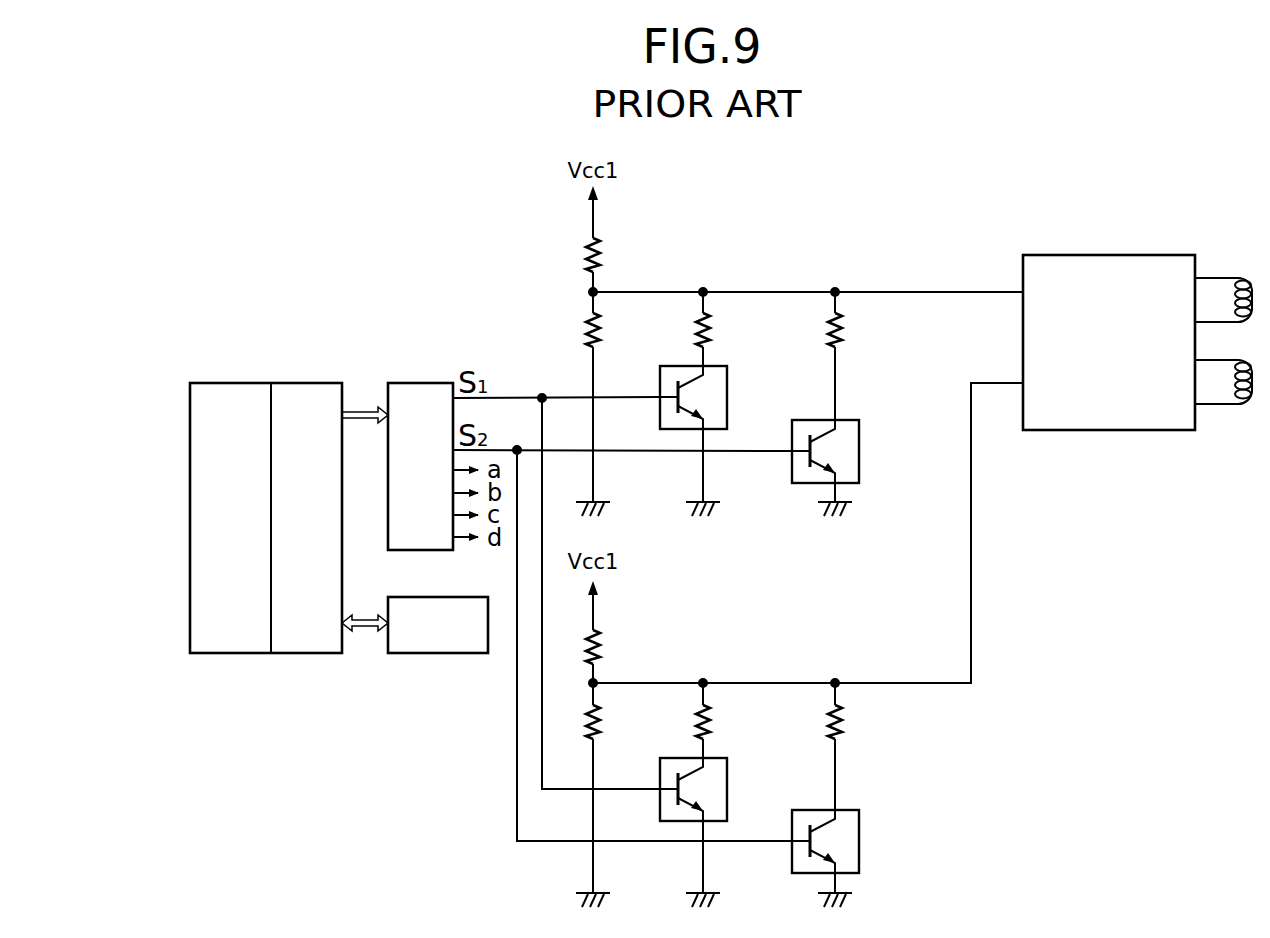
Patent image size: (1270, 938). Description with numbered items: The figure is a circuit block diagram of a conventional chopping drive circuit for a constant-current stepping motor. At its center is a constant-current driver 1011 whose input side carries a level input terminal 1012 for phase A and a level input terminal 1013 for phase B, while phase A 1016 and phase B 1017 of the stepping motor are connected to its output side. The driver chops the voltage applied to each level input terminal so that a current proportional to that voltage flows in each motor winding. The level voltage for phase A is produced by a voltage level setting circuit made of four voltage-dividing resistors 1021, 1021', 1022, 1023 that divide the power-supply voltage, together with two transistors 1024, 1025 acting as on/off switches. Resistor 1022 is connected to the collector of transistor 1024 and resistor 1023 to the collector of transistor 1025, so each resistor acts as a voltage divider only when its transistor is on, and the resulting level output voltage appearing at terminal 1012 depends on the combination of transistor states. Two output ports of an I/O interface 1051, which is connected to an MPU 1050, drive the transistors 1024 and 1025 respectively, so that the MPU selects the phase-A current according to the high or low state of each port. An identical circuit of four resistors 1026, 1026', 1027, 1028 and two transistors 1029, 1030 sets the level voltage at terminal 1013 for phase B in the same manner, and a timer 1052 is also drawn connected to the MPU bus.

The constant-current driver 1011 is at (1122, 255).
The level input terminal for phase A 1012 is at (920, 291).
The level input terminal for phase B 1013 is at (972, 550).
The phase A 1016 is at (1219, 278).
The phase B 1017 is at (1219, 405).
The voltage-dividing resistor 1021 is at (642, 251).
The voltage-dividing resistor 1021' is at (640, 325).
The voltage-dividing resistor 1022 is at (710, 322).
The voltage-dividing resistor 1023 is at (842, 322).
The transistor 1024 is at (727, 397).
The transistor 1025 is at (860, 450).
The resistor 1026 is at (642, 643).
The resistor 1026' is at (638, 718).
The resistor 1027 is at (710, 714).
The resistor 1028 is at (842, 714).
The transistor 1029 is at (727, 790).
The transistor 1030 is at (860, 842).
The MPU 1050 is at (251, 383).
The I/O 1051 is at (426, 383).
The timer 1052 is at (430, 655).